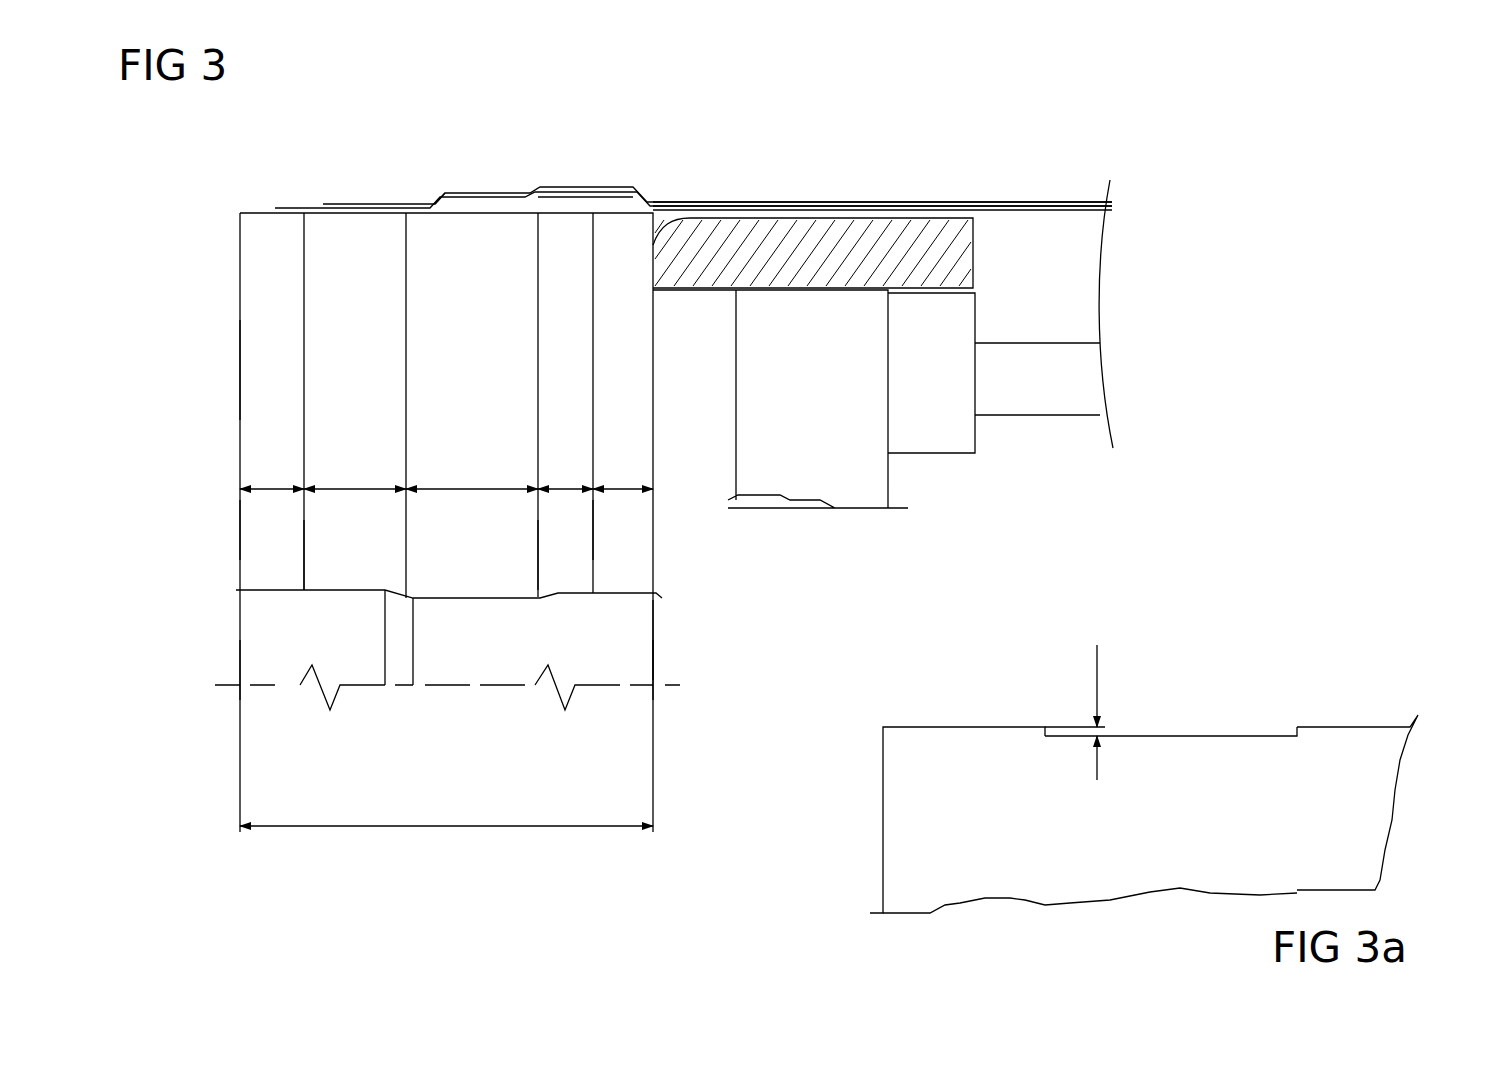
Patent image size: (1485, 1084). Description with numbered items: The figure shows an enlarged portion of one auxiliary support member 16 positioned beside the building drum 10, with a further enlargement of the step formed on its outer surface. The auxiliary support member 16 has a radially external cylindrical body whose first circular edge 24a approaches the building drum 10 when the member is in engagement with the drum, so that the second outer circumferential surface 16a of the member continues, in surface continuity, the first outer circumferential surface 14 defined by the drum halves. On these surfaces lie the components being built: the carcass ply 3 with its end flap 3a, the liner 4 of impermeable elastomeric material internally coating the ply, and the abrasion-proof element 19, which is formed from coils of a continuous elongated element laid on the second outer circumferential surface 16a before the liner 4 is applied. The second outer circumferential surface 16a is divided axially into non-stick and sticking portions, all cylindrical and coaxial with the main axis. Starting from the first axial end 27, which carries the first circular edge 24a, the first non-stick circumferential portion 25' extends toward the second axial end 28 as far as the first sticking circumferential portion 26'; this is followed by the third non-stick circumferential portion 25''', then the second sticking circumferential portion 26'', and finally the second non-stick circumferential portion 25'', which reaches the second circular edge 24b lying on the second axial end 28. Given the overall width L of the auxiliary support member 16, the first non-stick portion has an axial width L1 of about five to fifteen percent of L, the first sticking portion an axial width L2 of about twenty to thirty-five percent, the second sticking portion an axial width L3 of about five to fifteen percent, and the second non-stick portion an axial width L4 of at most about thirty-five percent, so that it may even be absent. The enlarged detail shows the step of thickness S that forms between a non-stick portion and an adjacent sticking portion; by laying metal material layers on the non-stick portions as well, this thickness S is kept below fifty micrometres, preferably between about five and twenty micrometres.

In FIG. 3, the carcass ply 3 is at (797, 202).
In FIG. 3, the end flap 3a is at (352, 208).
In FIG. 3, the liner 4 is at (1113, 213).
In FIG. 3, the building drum 10 is at (840, 305).
In FIG. 3, the first outer circumferential surface 14 is at (893, 212).
In FIG. 3, the auxiliary support member 16 is at (228, 325).
In FIG. 3, the second outer circumferential surface 16a is at (468, 200).
In FIG. 3, the abrasion-proof element 19 is at (562, 205).
In FIG. 3, the first circular edge 24a is at (655, 627).
In FIG. 3, the second circular edge 24b is at (240, 531).
In FIG. 3, the first non-stick circumferential portion 25' is at (741, 539).
In FIG. 3, the second non-stick circumferential portion 25'' is at (191, 370).
In FIG. 3A, the second non-stick circumferential portion 25'' is at (901, 820).
In FIG. 3, the third non-stick circumferential portion 25''' is at (472, 386).
In FIG. 3A, the third non-stick circumferential portion 25''' is at (1357, 735).
In FIG. 3, the first sticking circumferential portion 26' is at (669, 568).
In FIG. 3, the second sticking circumferential portion 26'' is at (235, 585).
In FIG. 3A, the second sticking circumferential portion 26'' is at (1171, 753).
In FIG. 3, the first axial end 27 is at (668, 663).
In FIG. 3, the second axial end 28 is at (230, 660).
In FIG. 3, the overall width L is at (440, 827).
In FIG. 3, the axial width of first non-stick circumferential portion L1 is at (632, 487).
In FIG. 3, the axial width of first sticking circumferential portion L2 is at (572, 487).
In FIG. 3, the axial width of second sticking circumferential portion L3 is at (355, 487).
In FIG. 3, the axial width of second non-stick circumferential portion L4 is at (272, 488).
In FIG. 3A, the thickness of the step S is at (1097, 675).